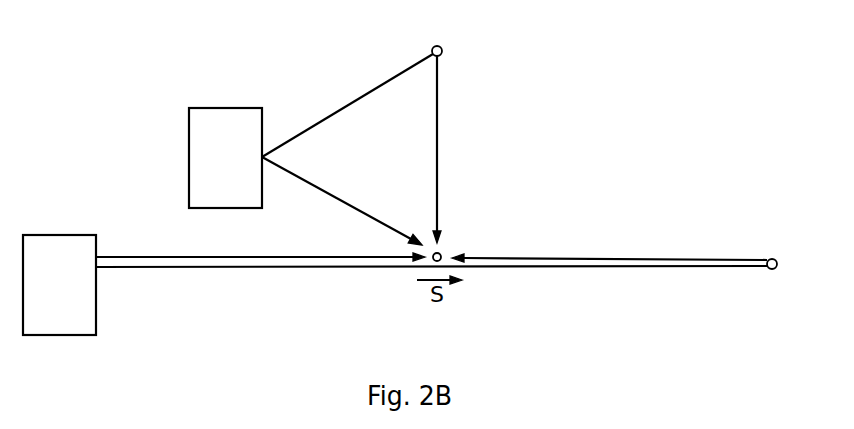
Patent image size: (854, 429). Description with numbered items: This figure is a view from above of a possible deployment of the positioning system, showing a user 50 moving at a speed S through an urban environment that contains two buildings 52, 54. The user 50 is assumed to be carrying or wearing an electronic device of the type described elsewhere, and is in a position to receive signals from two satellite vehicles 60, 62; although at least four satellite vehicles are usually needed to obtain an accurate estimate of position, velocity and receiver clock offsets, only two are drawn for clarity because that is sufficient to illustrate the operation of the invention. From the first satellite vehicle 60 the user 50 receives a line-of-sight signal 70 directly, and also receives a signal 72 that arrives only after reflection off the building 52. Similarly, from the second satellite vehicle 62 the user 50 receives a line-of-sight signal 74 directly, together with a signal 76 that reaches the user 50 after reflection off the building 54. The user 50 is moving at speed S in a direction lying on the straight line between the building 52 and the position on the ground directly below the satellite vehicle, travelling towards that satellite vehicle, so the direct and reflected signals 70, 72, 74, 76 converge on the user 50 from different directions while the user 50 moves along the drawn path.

The user 50 is at (442, 254).
The building 52 is at (55, 235).
The building 54 is at (228, 108).
The first satellite vehicle 60 is at (778, 262).
The second satellite vehicle 62 is at (443, 52).
The line-of-sight signal 70 is at (620, 257).
The reflected signal 72 is at (297, 257).
The line-of-sight signal 74 is at (438, 103).
The reflected signal 76 is at (312, 183).